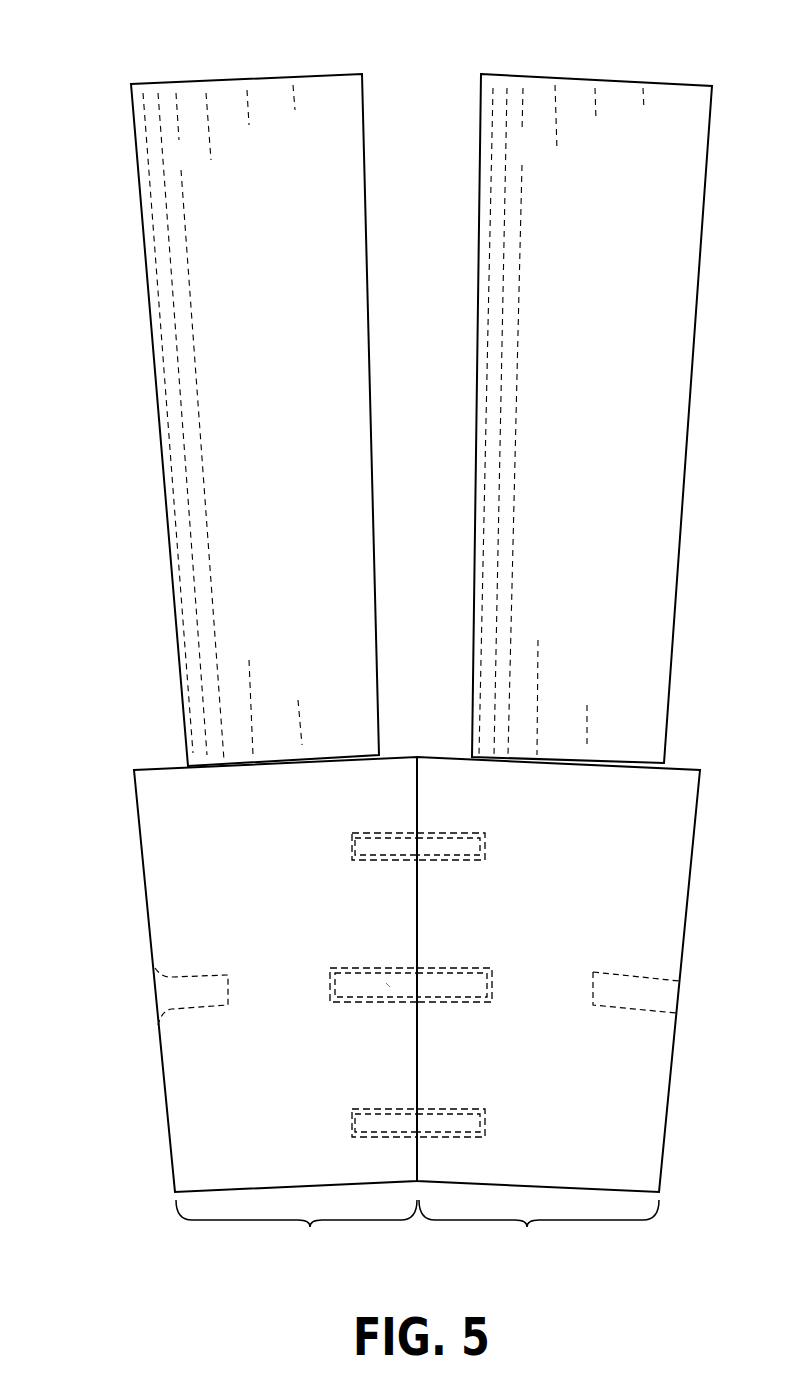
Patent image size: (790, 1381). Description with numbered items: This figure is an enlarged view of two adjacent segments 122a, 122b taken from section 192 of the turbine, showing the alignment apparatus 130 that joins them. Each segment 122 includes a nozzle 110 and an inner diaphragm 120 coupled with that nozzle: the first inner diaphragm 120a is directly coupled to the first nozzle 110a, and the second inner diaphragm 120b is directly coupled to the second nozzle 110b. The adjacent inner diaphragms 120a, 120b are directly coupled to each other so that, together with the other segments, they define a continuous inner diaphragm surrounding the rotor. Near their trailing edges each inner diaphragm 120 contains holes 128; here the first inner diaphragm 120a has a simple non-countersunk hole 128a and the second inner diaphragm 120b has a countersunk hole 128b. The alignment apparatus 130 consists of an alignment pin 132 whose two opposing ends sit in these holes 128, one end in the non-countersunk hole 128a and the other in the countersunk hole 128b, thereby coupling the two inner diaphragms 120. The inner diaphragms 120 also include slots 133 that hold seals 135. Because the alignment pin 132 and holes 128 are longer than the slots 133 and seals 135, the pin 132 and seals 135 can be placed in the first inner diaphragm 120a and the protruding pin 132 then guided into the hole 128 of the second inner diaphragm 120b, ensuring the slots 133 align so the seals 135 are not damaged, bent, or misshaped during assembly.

The section 192 is at (84, 104).
The nozzle 110 is at (421, 420).
The first nozzle 110a is at (341, 419).
The second nozzle 110b is at (660, 393).
The inner diaphragm 120 is at (417, 974).
The first inner diaphragm 120a is at (297, 831).
The second inner diaphragm 120b is at (640, 831).
The segment 122 is at (417, 1232).
The first segment 122a is at (296, 1232).
The second segment 122b is at (539, 1232).
The hole 128 is at (405, 1026).
The non-countersunk hole 128a is at (358, 1002).
The countersunk hole 128b is at (455, 1000).
The alignment apparatus 130 is at (381, 984).
The alignment pin 132 is at (388, 985).
The slot 133 is at (485, 848).
The seal 135 is at (352, 845).